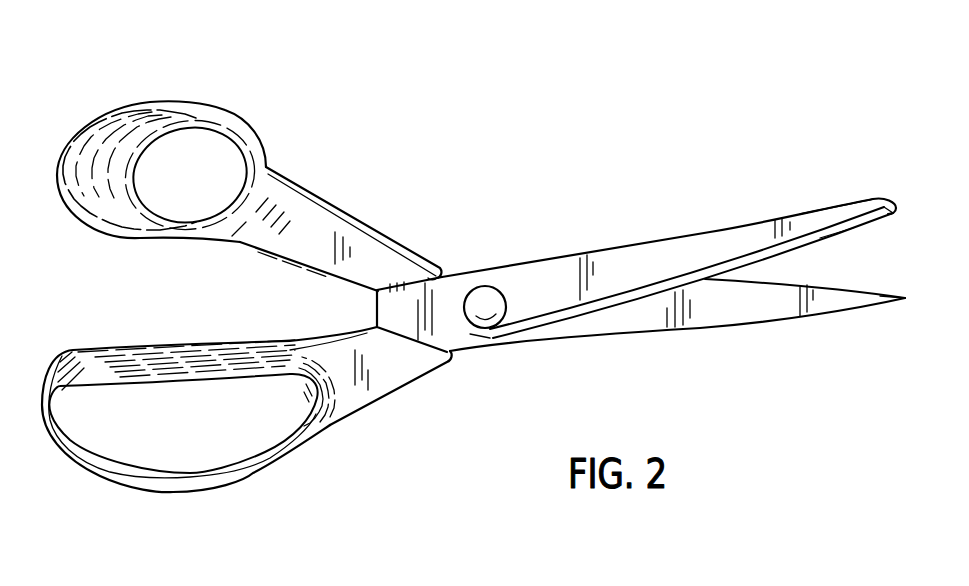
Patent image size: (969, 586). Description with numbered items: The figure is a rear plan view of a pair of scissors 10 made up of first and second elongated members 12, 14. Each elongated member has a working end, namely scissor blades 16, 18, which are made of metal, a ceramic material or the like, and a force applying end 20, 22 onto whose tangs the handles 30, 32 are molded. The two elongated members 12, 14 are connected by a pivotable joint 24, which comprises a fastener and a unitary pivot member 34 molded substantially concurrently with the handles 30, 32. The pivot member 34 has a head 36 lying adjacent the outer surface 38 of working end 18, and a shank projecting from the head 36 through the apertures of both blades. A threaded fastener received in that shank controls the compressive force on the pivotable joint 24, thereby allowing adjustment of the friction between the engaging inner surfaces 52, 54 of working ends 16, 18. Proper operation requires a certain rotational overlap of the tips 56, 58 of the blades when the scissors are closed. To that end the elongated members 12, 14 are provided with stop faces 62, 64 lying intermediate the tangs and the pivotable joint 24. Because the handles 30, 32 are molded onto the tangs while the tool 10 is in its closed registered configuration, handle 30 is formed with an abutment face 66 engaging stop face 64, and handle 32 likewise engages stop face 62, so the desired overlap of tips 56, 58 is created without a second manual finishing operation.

The pair of scissors 10 is at (547, 196).
The first elongated member 12 is at (819, 330).
The second elongated member 14 is at (849, 192).
The working end 16 is at (736, 330).
The working end 18 is at (746, 230).
The force applying end 20 is at (272, 163).
The force applying end 22 is at (254, 484).
The pivotable joint 24 is at (523, 282).
The handle 30 is at (176, 103).
The handle 32 is at (151, 494).
The pivot member 34 is at (487, 280).
The head 36 is at (481, 333).
The outer surface 38 is at (590, 255).
The inner surface 52 is at (786, 283).
The inner surface 54 is at (853, 236).
The tip 56 is at (907, 302).
The tip 58 is at (890, 222).
The stop face 62 is at (373, 323).
The stop face 64 is at (373, 289).
The abutment face 66 is at (445, 262).